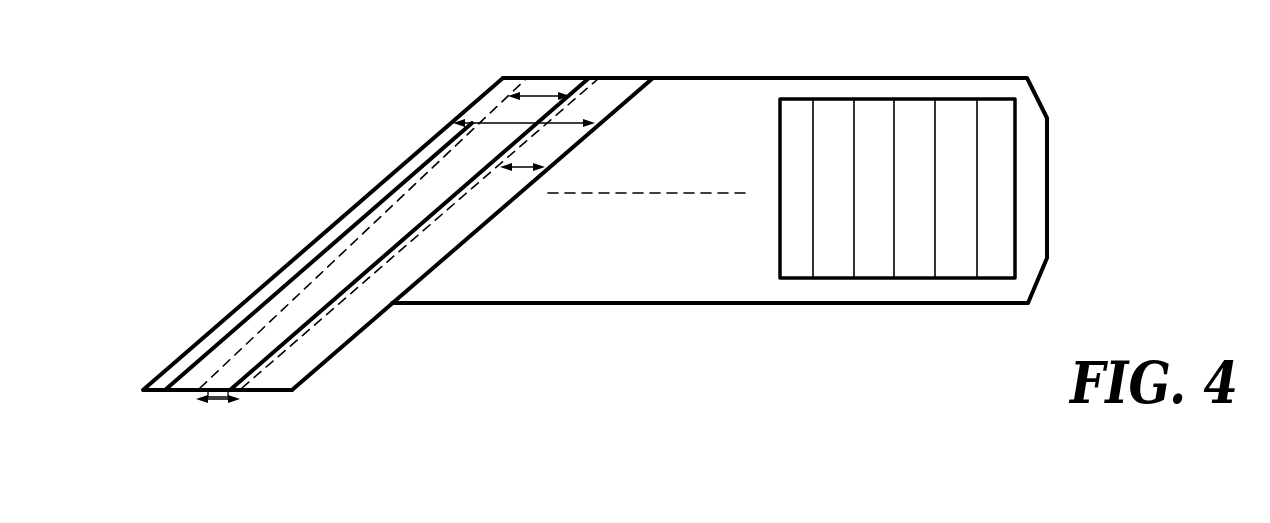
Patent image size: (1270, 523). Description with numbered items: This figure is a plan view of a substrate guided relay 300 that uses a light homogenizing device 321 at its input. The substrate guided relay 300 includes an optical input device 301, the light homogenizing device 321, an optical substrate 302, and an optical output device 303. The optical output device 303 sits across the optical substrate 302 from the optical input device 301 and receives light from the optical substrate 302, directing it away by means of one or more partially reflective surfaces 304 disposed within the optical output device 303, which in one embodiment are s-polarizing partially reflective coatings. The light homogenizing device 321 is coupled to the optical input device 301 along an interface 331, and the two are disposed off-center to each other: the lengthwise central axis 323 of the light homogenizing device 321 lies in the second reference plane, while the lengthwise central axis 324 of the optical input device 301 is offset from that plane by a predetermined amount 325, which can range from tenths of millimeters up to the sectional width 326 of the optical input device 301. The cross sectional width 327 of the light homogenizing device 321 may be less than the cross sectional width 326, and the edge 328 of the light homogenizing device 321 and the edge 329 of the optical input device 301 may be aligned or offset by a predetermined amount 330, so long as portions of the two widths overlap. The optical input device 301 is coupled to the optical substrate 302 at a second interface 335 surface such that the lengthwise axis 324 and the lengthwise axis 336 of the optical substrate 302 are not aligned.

The substrate guided relay 300 is at (230, 178).
The optical input device 301 is at (178, 357).
The optical substrate 302 is at (642, 285).
The optical output device 303 is at (876, 99).
The partially reflective surfaces 304 is at (893, 212).
The light homogenizing device 321 is at (380, 225).
The lengthwise central axis of the light homogenizing device 323 is at (263, 329).
The lengthwise central axis of the optical input device 324 is at (322, 316).
The offset amount 325 is at (218, 405).
The cross sectional width of the optical input device 326 is at (488, 118).
The cross sectional width of the light homogenizing device 327 is at (522, 92).
The edge of the light homogenizing device 328 is at (283, 355).
The edge of the optical input device 329 is at (388, 315).
The offset amount between edges 330 is at (523, 170).
The interface 331 is at (412, 244).
The second interface surface 335 is at (638, 106).
The lengthwise axis of the optical substrate 336 is at (668, 192).